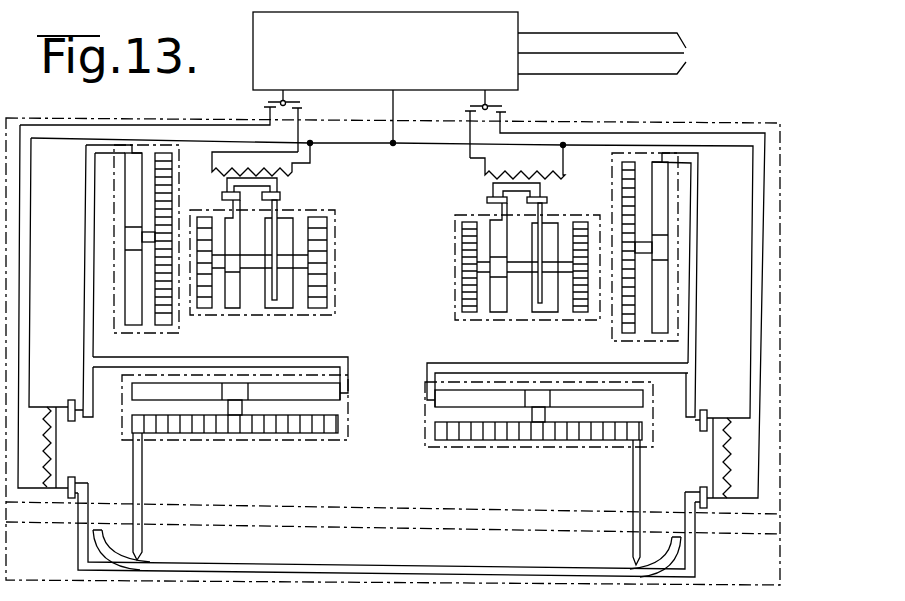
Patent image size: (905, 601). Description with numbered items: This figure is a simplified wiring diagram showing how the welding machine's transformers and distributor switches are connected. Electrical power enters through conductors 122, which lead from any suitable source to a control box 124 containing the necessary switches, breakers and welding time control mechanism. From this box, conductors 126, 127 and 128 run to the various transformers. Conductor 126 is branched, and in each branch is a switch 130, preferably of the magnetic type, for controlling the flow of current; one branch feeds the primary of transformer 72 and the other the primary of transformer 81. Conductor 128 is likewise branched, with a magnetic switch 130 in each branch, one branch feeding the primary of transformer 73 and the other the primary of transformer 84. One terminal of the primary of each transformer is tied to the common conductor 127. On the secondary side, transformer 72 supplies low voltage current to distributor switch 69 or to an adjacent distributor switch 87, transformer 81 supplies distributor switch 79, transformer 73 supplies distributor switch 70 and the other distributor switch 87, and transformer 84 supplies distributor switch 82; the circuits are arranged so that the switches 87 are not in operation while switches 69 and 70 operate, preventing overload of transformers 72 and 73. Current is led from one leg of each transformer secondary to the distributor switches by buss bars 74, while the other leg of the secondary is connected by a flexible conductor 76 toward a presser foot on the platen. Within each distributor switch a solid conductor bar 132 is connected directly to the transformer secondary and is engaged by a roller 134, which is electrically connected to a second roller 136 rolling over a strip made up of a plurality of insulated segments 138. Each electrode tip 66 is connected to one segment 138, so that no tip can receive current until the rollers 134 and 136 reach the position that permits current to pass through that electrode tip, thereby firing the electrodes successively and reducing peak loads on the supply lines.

The conductors 122 is at (621, 53).
The control box 124 is at (385, 51).
The conductor 126 is at (292, 99).
The conductor 127 is at (394, 108).
The conductor 128 is at (495, 101).
The switch 130 is at (265, 105).
The transformer 81 is at (261, 159).
The transformer 84 is at (517, 162).
The distributor switch 87 is at (175, 160).
The distributor switch 79 is at (333, 217).
The distributor switch 82 is at (457, 218).
The buss bars 74 is at (83, 364).
The transformer 72 is at (54, 449).
The transformer 73 is at (721, 459).
The solid conductor bar 132 is at (236, 391).
The roller 134 is at (236, 391).
The second roller 136 is at (242, 425).
The insulated segments 138 is at (280, 428).
The distributor switch 69 is at (336, 440).
The distributor switch 70 is at (441, 446).
The electrode tip 66 is at (143, 544).
The flexible conductor 76 is at (78, 542).